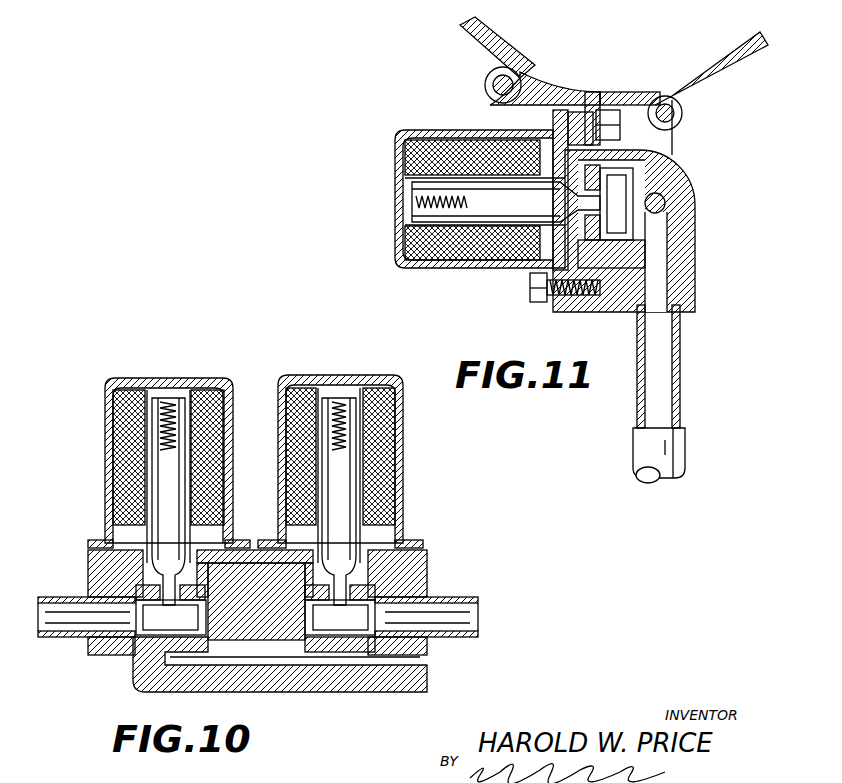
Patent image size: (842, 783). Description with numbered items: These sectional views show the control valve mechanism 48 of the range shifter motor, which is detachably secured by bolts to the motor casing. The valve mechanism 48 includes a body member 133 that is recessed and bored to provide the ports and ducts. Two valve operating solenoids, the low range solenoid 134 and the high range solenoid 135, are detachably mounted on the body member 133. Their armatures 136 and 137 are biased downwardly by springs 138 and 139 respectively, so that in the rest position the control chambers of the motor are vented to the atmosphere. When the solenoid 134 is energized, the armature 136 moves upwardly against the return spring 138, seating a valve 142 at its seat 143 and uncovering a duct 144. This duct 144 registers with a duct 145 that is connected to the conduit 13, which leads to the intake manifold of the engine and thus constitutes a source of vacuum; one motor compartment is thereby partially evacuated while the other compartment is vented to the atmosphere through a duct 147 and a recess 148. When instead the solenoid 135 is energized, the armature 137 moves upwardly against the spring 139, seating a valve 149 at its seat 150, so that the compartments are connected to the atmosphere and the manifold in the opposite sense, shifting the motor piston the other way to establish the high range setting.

In FIG. 11, the conduit 13 is at (668, 454).
In FIG. 10, the valve mechanism 48 is at (250, 400).
In FIG. 10, the body member 133 is at (412, 576).
In FIG. 11, the body member 133 is at (690, 247).
In FIG. 10, the low range solenoid 134 is at (105, 452).
In FIG. 10, the high range solenoid 135 is at (405, 444).
In FIG. 11, the high range solenoid 135 is at (470, 272).
In FIG. 10, the armature 136 is at (158, 482).
In FIG. 10, the armature 137 is at (340, 496).
In FIG. 11, the armature 137 is at (485, 195).
In FIG. 10, the return spring 138 is at (168, 398).
In FIG. 10, the spring 139 is at (343, 395).
In FIG. 11, the spring 139 is at (412, 205).
In FIG. 10, the valve 142 is at (150, 617).
In FIG. 10, the valve seat 143 is at (150, 595).
In FIG. 10, the duct 144 is at (172, 635).
In FIG. 11, the duct 144 is at (660, 200).
In FIG. 11, the duct 145 is at (665, 352).
In FIG. 11, the duct 147 is at (615, 298).
In FIG. 11, the recess 148 is at (548, 300).
In FIG. 10, the valve 149 is at (360, 620).
In FIG. 10, the valve seat 150 is at (368, 592).